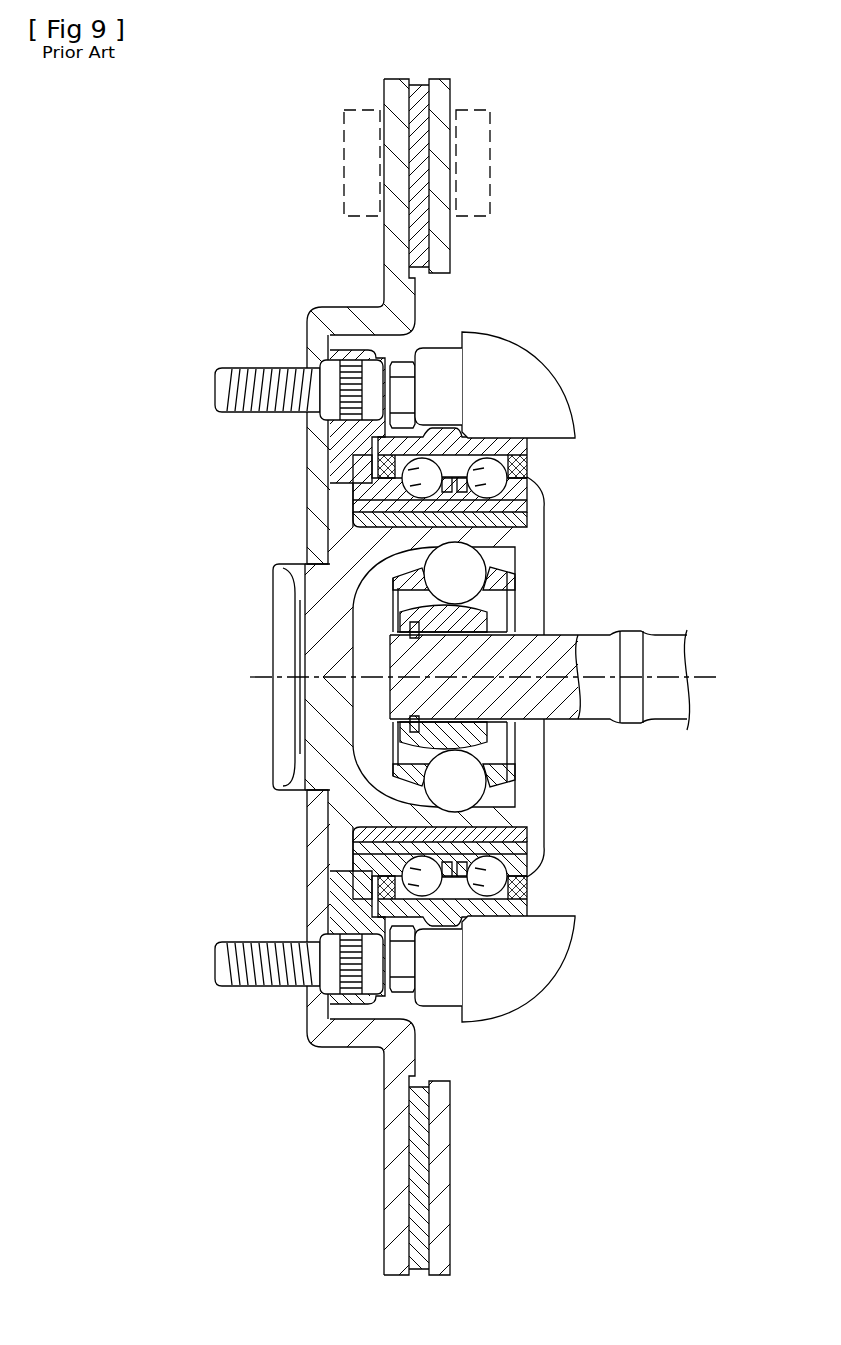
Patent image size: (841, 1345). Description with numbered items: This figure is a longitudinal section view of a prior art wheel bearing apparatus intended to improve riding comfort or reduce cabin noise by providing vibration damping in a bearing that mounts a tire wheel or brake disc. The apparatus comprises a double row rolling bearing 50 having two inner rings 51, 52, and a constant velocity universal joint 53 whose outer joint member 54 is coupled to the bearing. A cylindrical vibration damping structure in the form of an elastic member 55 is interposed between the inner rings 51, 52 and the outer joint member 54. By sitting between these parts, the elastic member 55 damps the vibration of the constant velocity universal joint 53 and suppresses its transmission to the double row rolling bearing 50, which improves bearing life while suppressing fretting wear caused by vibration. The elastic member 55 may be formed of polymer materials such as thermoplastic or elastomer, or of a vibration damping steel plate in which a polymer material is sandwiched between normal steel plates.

The double row rolling bearing 50 is at (503, 430).
The inner ring 51 is at (365, 502).
The inner ring 52 is at (508, 503).
The constant velocity universal joint 53 is at (538, 601).
The outer joint member 54 is at (317, 613).
The elastic member 55 is at (352, 518).